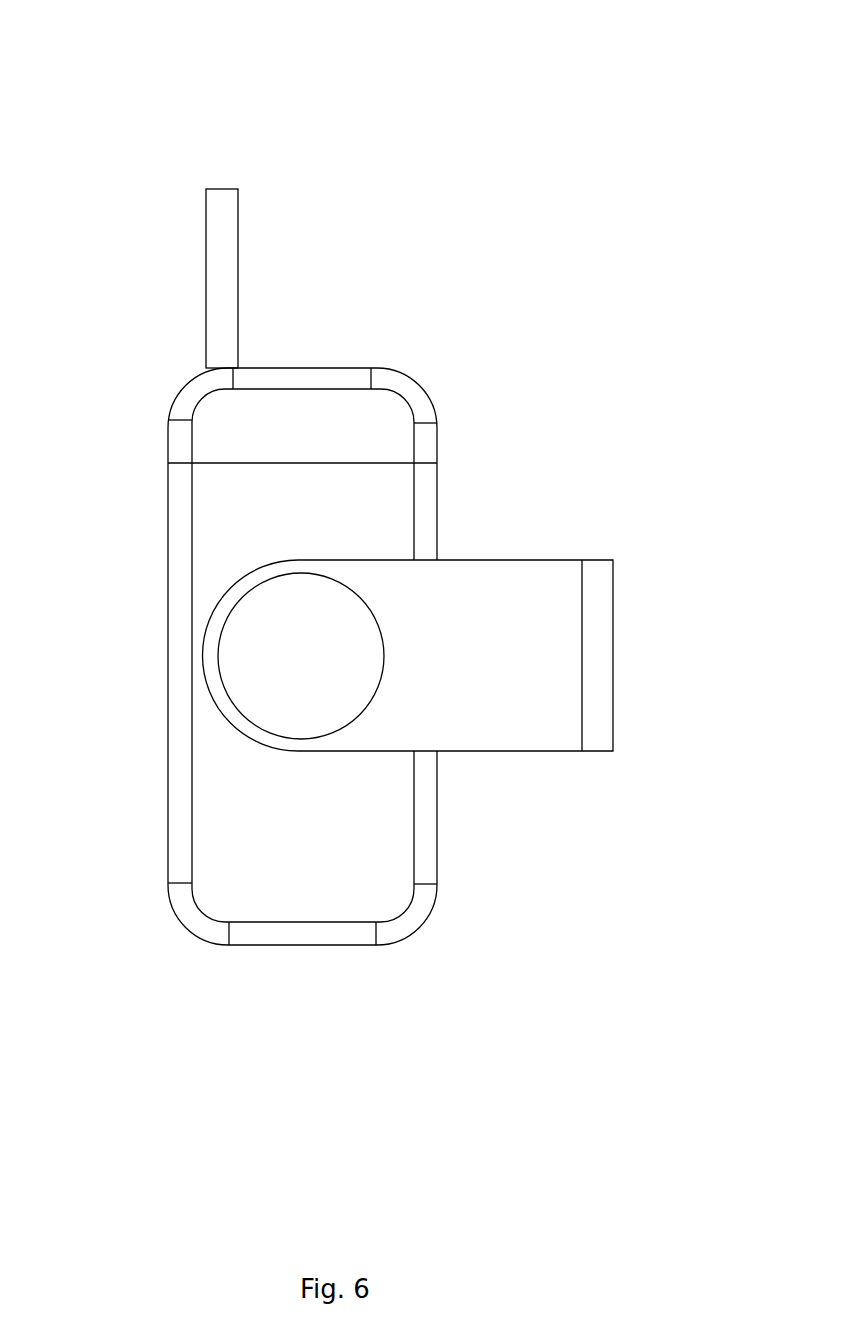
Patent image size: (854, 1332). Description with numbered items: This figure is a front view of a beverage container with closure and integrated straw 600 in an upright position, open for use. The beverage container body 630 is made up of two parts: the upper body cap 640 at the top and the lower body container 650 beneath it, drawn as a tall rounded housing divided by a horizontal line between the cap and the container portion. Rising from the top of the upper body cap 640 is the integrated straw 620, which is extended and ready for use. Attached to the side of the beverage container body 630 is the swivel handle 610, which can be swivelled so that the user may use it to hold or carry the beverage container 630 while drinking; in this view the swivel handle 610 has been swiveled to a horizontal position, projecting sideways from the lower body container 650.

The beverage container with closure and integrated straw 600 is at (383, 472).
The swivel handle 610 is at (497, 732).
The integrated straw 620 is at (220, 273).
The beverage container body 630 is at (142, 386).
The upper body cap 640 is at (302, 442).
The lower body container 650 is at (303, 493).